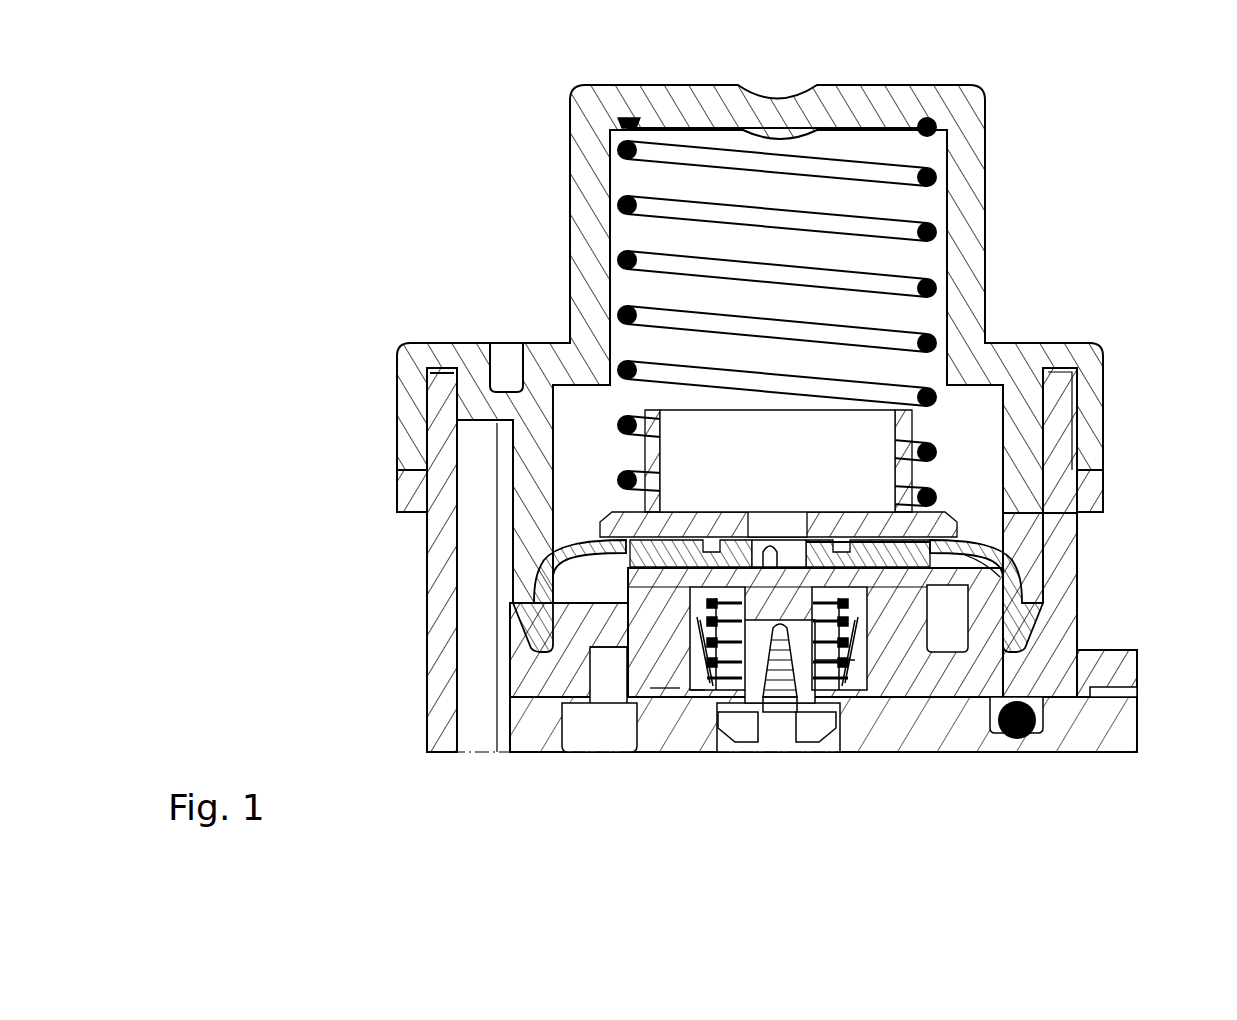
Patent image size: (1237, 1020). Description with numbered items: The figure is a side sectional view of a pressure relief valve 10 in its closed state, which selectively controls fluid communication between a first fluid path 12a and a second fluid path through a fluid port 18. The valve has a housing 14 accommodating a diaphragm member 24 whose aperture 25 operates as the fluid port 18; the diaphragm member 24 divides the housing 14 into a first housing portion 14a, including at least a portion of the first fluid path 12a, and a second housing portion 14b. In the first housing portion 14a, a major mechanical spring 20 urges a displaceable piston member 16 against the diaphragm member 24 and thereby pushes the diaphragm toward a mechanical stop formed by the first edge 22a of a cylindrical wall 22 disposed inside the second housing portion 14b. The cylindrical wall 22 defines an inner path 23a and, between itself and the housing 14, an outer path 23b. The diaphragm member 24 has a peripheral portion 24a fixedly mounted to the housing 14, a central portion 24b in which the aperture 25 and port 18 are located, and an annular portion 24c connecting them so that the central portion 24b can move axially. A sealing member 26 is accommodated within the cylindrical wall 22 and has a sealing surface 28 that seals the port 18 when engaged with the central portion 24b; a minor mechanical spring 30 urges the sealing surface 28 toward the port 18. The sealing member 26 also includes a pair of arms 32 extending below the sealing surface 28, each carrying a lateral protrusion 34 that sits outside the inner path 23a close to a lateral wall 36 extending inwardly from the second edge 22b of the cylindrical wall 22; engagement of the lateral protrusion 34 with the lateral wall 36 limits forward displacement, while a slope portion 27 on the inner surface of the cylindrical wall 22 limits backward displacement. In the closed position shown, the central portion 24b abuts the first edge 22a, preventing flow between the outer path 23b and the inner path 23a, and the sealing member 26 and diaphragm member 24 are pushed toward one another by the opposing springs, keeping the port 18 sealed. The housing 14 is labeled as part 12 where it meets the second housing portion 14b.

The pressure relief valve 10 is at (450, 190).
The housing 12 is at (767, 560).
The first fluid path 12a is at (575, 487).
The housing 14 is at (996, 150).
The first housing portion 14a is at (992, 212).
The second housing portion 14b is at (425, 595).
The piston member 16 is at (800, 540).
The fluid port 18 is at (787, 552).
The major mechanical spring 20 is at (660, 268).
The cylindrical wall 22 is at (1000, 588).
The first edge 22a is at (905, 553).
The second edge 22b is at (605, 628).
The inner path 23a is at (603, 607).
The outer path 23b is at (600, 657).
The diaphragm member 24 is at (625, 547).
The peripheral portion 24a is at (870, 545).
The central portion 24b is at (1017, 625).
The annular portion 24c is at (960, 558).
The aperture 25 is at (695, 690).
The sealing member 26 is at (857, 602).
The slope portion 27 is at (690, 605).
The sealing surface 28 is at (737, 540).
The minor mechanical spring 30 is at (735, 722).
The arms 32 is at (840, 668).
The lateral protrusion 34 is at (750, 730).
The lateral wall 36 is at (662, 688).